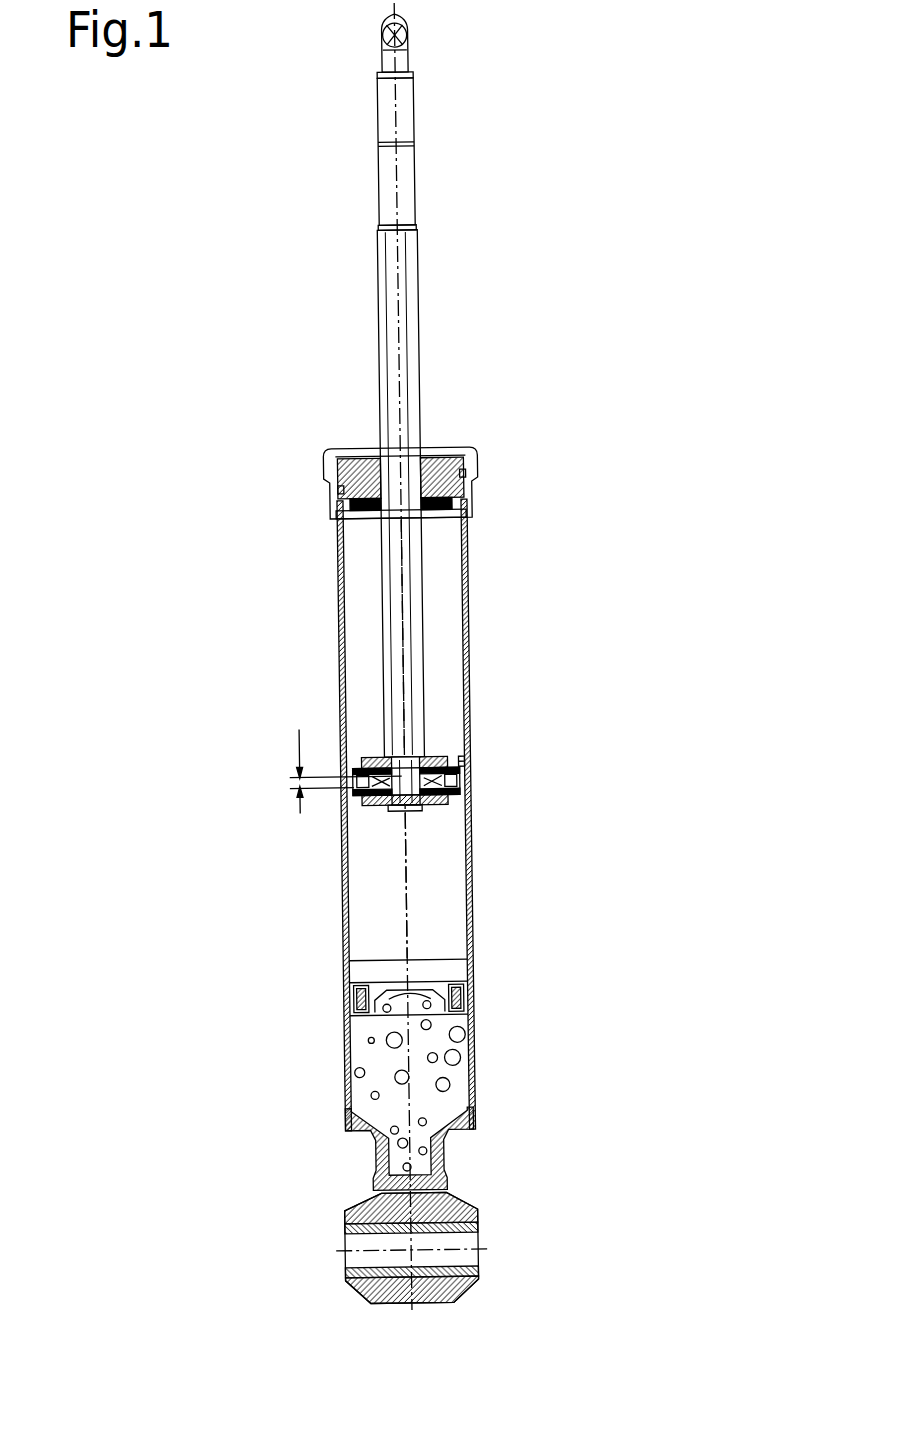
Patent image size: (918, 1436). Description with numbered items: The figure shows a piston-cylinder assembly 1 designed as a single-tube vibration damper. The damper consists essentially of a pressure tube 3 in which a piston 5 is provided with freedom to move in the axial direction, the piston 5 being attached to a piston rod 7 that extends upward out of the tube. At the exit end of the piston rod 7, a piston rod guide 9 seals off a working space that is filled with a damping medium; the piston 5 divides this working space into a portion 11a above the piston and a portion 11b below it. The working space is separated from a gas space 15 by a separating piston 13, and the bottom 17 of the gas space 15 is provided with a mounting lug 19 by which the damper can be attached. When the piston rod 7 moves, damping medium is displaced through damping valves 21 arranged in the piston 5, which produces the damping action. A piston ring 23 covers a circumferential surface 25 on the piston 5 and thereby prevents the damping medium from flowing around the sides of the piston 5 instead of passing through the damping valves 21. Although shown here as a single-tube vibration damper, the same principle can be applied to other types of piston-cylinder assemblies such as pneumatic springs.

The piston-cylinder assembly 1 is at (172, 860).
The pressure tube 3 is at (470, 641).
The piston 5 is at (352, 836).
The piston rod 7 is at (388, 290).
The piston rod guide 9 is at (470, 480).
The working space 11a is at (360, 651).
The working space 11b is at (443, 917).
The separating piston 13 is at (437, 985).
The gas space 15 is at (441, 1072).
The bottom 17 is at (470, 1132).
The mounting lug 19 is at (470, 1215).
The damping valves 21 is at (362, 806).
The piston ring 23 is at (473, 754).
The circumferential surface 25 is at (313, 771).